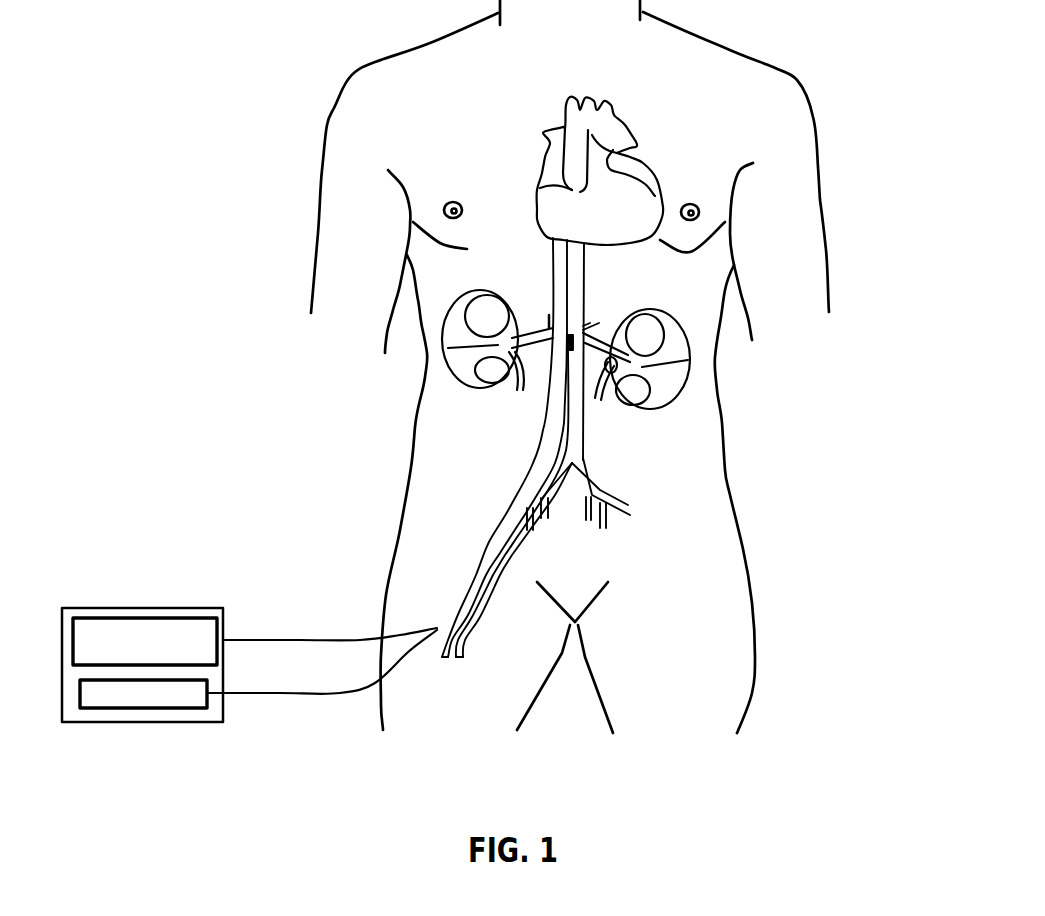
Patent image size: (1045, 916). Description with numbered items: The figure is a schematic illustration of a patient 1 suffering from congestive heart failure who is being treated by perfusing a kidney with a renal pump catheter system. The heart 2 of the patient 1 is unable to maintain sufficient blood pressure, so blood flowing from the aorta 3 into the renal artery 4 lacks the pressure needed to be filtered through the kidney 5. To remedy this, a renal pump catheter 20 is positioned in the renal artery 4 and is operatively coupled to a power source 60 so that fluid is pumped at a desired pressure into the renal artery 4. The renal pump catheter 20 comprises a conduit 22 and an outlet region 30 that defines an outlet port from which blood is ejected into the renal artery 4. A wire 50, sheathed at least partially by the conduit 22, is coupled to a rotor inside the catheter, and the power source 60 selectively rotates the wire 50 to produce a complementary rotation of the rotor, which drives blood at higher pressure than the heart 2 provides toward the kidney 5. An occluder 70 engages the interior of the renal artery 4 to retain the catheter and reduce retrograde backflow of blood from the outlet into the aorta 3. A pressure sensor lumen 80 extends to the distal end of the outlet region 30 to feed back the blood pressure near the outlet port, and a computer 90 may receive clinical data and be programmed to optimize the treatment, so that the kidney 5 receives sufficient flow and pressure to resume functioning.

The patient 1 is at (413, 454).
The heart 2 is at (600, 183).
The aorta 3 is at (556, 337).
The renal artery 4 is at (598, 322).
The kidney 5 is at (690, 343).
The renal pump catheter 20 is at (553, 320).
The conduit 22 is at (550, 497).
The outlet region 30 is at (590, 323).
The wire 50 is at (577, 467).
The power source 60 is at (118, 707).
The occluder 70 is at (604, 395).
The pressure sensor lumen 80 is at (401, 637).
The computer 90 is at (110, 618).